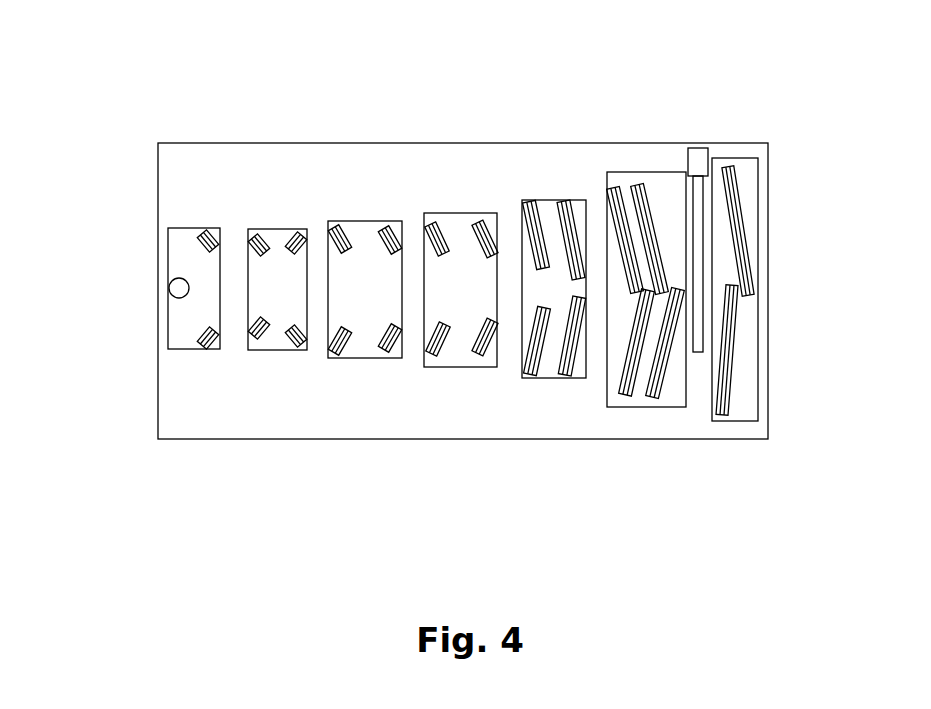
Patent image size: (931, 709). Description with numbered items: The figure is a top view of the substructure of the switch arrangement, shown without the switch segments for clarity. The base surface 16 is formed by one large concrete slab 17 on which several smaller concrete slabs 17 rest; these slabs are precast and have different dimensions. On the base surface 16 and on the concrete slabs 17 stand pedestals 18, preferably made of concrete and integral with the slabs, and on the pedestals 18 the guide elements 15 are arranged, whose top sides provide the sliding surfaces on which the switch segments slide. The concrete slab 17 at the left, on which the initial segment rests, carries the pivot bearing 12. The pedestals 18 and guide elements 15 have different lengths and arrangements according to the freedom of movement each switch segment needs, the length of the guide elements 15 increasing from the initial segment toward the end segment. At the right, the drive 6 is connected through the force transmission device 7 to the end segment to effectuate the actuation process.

The base surface 16 is at (349, 130).
The concrete slab 17 is at (165, 163).
The pivot bearing 12 is at (178, 292).
The guide element 15 is at (388, 237).
The pedestal 18 is at (571, 191).
The drive 6 is at (695, 158).
The force transmission device 7 is at (697, 190).